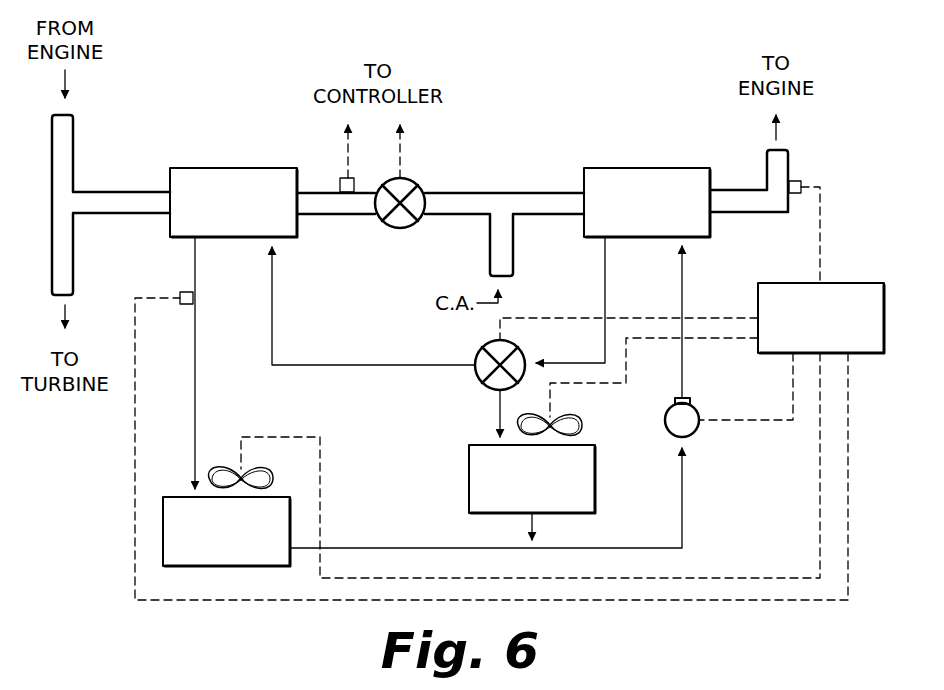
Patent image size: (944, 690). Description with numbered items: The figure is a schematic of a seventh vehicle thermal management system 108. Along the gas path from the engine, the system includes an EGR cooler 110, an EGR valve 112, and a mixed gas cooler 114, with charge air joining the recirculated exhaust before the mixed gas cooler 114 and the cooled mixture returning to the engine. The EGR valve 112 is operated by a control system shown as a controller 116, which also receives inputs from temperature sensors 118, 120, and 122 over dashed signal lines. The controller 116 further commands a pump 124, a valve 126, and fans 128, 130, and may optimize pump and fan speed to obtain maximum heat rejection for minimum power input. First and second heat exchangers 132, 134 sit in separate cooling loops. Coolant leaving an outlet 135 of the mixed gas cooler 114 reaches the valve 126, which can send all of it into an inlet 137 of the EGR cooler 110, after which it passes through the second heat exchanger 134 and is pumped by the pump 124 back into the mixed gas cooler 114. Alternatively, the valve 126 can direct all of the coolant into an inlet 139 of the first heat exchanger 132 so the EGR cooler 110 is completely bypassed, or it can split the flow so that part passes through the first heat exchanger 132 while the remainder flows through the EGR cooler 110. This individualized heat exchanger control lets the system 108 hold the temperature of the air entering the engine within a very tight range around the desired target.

The vehicle thermal management system 108 is at (632, 55).
The EGR cooler 110 is at (207, 168).
The EGR valve 112 is at (400, 229).
The mixed gas cooler 114 is at (652, 168).
The controller 116 is at (845, 283).
The temperature sensor 118 is at (340, 185).
The temperature sensor 120 is at (186, 292).
The temperature sensor 122 is at (799, 181).
The pump 124 is at (692, 434).
The valve 126 is at (487, 385).
The fan 128 is at (585, 424).
The fan 130 is at (241, 472).
The first heat exchanger 132 is at (469, 470).
The second heat exchanger 134 is at (290, 518).
The outlet 135 is at (607, 240).
The inlet 137 is at (276, 242).
The inlet 139 is at (498, 443).